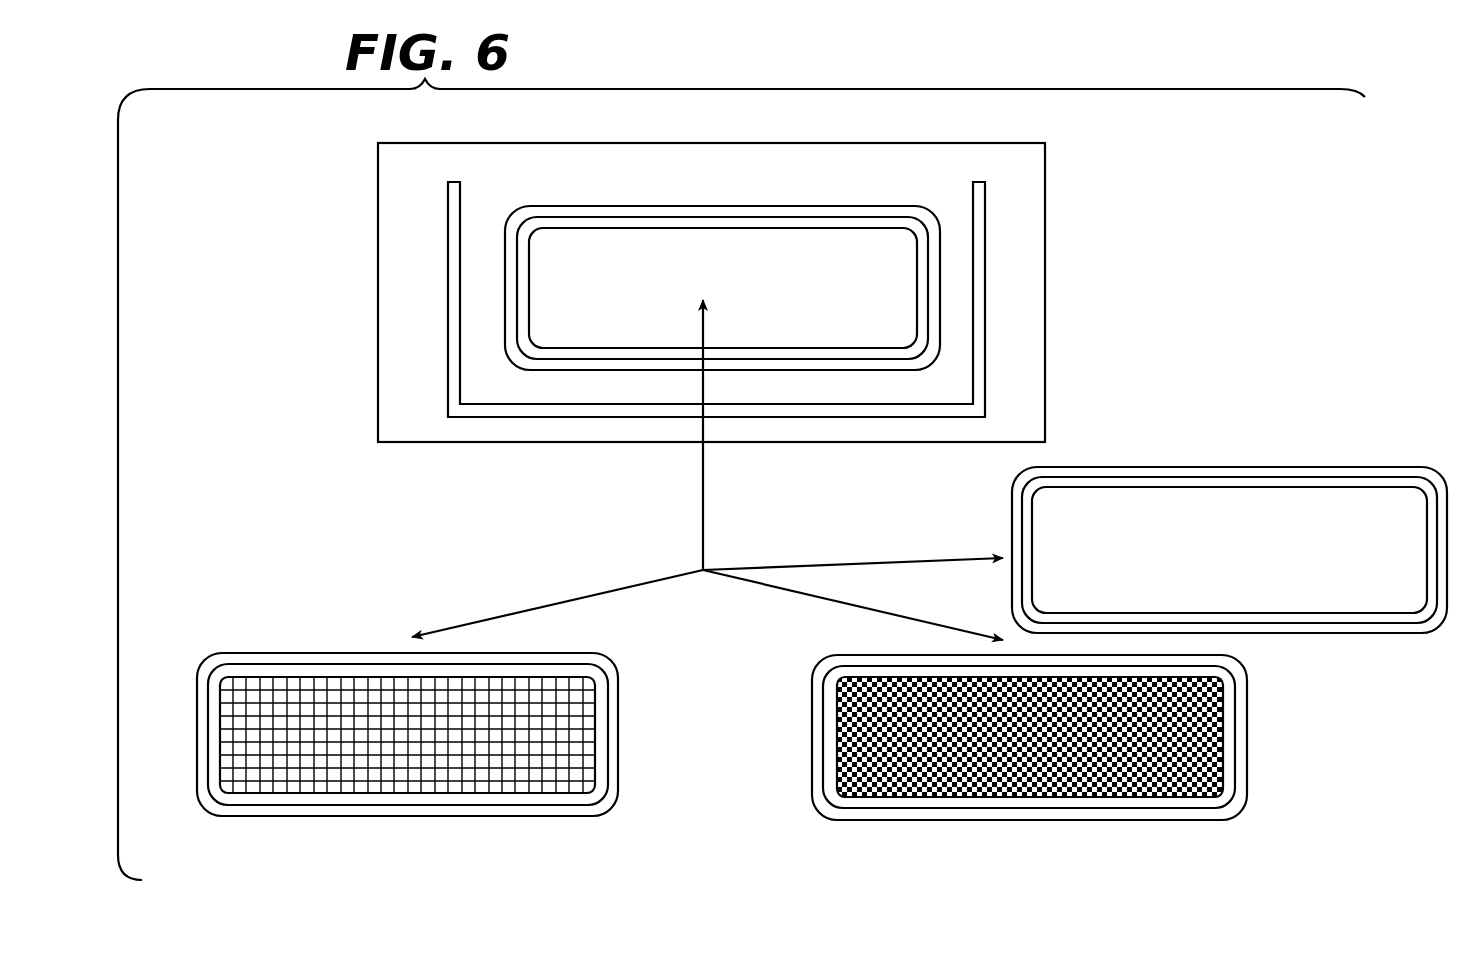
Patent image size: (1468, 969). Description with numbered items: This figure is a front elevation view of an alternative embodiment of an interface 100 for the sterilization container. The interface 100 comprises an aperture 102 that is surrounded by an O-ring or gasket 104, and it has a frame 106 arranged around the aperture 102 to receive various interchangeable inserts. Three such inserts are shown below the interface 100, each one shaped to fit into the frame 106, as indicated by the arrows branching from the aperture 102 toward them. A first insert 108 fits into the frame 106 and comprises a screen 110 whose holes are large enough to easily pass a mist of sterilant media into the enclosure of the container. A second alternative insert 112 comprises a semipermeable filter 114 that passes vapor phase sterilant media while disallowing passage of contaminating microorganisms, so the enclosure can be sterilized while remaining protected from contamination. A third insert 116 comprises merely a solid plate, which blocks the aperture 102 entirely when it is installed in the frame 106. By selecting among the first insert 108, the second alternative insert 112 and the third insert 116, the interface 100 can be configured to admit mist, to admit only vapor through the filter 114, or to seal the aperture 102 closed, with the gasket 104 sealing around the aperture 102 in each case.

The interface 100 is at (1010, 302).
The aperture 102 is at (850, 252).
The O-ring or gasket 104 is at (787, 206).
The frame 106 is at (985, 235).
The first insert 108 is at (198, 800).
The screen 110 is at (230, 733).
The second alternative insert 112 is at (1242, 803).
The semipermeable filter 114 is at (1200, 754).
The third insert 116 is at (1012, 485).